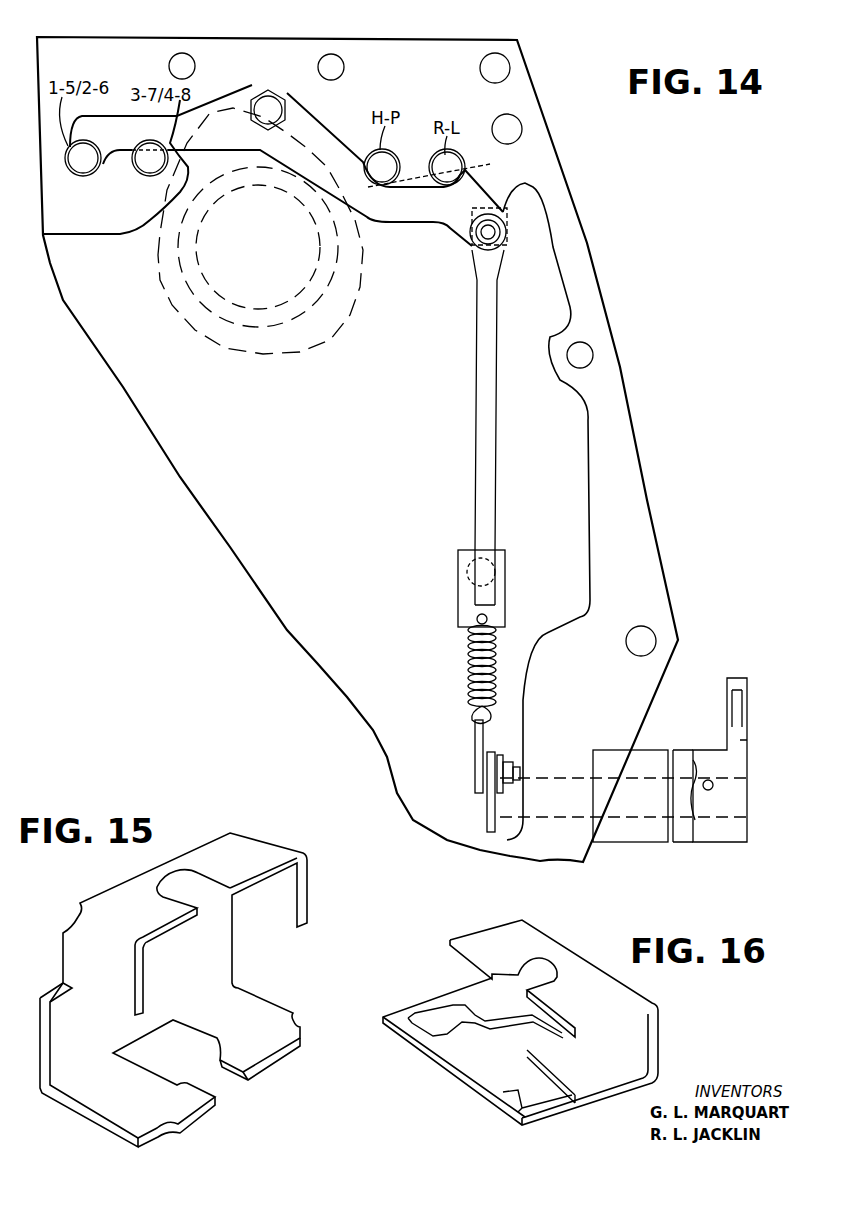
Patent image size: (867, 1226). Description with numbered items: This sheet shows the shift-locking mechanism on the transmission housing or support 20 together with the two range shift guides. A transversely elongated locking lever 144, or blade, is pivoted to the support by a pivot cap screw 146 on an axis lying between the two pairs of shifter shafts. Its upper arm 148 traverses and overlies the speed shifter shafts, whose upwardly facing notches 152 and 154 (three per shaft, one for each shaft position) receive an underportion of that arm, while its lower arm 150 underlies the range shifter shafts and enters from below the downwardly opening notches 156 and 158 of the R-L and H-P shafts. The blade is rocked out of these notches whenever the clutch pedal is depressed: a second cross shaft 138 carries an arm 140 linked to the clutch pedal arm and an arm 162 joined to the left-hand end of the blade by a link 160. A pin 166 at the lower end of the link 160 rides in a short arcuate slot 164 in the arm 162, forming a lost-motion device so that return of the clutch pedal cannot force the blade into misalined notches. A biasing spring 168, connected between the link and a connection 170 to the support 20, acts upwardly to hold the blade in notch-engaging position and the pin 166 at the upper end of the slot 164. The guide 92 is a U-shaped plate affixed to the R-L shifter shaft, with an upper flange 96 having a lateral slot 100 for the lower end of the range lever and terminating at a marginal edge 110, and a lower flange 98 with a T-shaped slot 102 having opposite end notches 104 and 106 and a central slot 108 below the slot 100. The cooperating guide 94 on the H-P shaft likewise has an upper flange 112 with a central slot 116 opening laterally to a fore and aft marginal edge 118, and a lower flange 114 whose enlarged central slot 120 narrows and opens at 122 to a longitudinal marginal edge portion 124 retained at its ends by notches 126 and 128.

In FIG. 14, the transmission housing or support 20 is at (512, 50).
In FIG. 14, the second cross shaft 138 is at (735, 832).
In FIG. 14, the arm 140 is at (748, 740).
In FIG. 14, the locking lever 144 is at (278, 163).
In FIG. 14, the pivot cap screw 146 is at (282, 106).
In FIG. 14, the upper arm 148 is at (213, 136).
In FIG. 14, the lower arm 150 is at (430, 223).
In FIG. 14, the notches 152 is at (88, 158).
In FIG. 14, the notches 154 is at (148, 140).
In FIG. 14, the notches 156 is at (446, 171).
In FIG. 14, the notches 158 is at (372, 189).
In FIG. 14, the link 160 is at (478, 433).
In FIG. 14, the arm 162 is at (488, 826).
In FIG. 14, the arcuate slot 164 is at (487, 803).
In FIG. 14, the pin 166 is at (510, 767).
In FIG. 14, the biasing spring 168 is at (468, 667).
In FIG. 14, the connection 170 is at (460, 598).
In FIG. 15, the guide 94 is at (50, 1097).
In FIG. 15, the upper flange 112 is at (260, 850).
In FIG. 15, the lower flange 114 is at (275, 1046).
In FIG. 15, the central slot 116 is at (167, 872).
In FIG. 15, the marginal edge 118 is at (177, 920).
In FIG. 15, the central slot 120 is at (168, 1042).
In FIG. 15, the opening 122 is at (225, 1087).
In FIG. 15, the marginal edge portion 124 is at (202, 1120).
In FIG. 15, the notch 126 is at (165, 1130).
In FIG. 15, the notch 128 is at (300, 1023).
In FIG. 16, the guide 92 is at (655, 1035).
In FIG. 16, the upper flange 96 is at (492, 923).
In FIG. 16, the lower flange 98 is at (620, 1090).
In FIG. 16, the lateral slot 100 is at (542, 967).
In FIG. 16, the T-shaped slot 102 is at (485, 1055).
In FIG. 16, the end notch 104 is at (415, 1018).
In FIG. 16, the end notch 106 is at (518, 1103).
In FIG. 16, the central slot 108 is at (528, 1037).
In FIG. 16, the marginal edge 110 is at (450, 940).